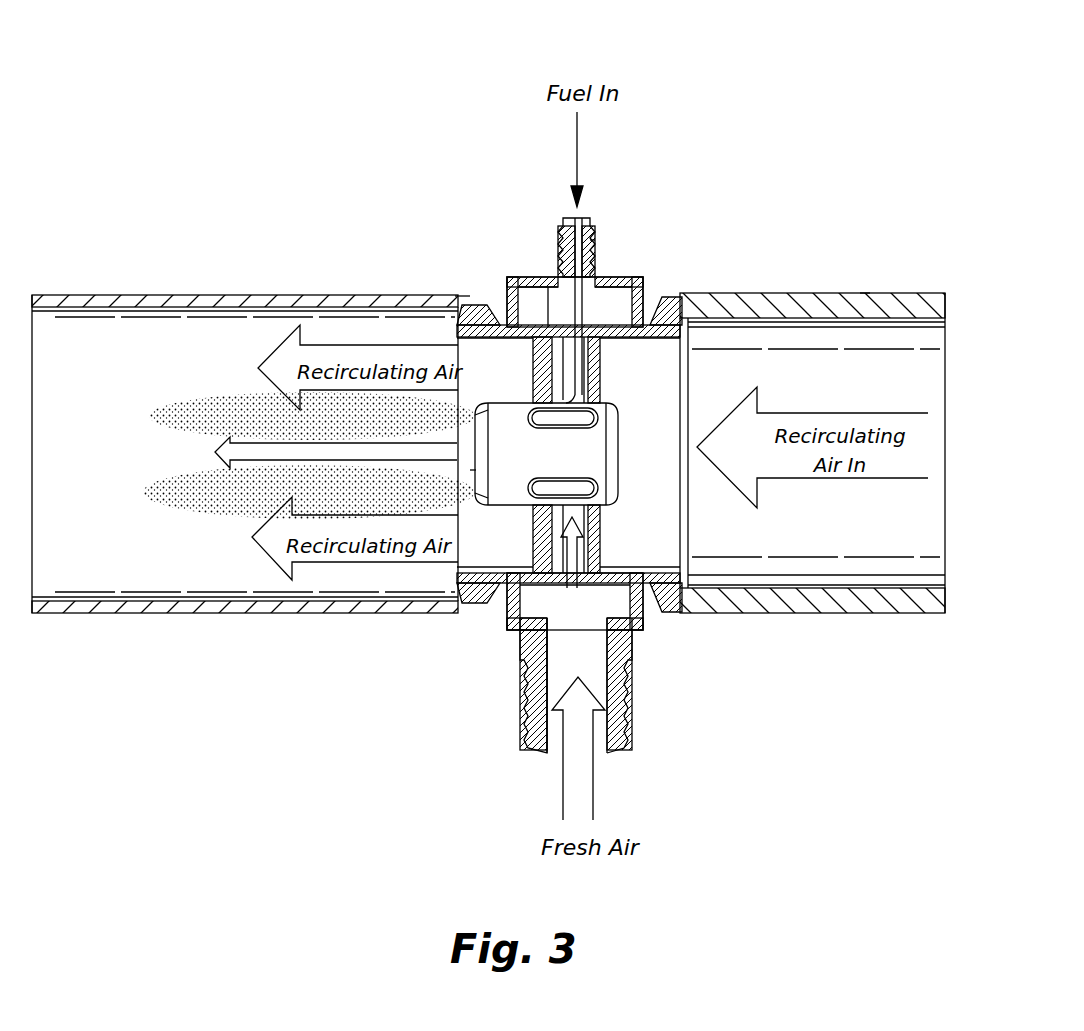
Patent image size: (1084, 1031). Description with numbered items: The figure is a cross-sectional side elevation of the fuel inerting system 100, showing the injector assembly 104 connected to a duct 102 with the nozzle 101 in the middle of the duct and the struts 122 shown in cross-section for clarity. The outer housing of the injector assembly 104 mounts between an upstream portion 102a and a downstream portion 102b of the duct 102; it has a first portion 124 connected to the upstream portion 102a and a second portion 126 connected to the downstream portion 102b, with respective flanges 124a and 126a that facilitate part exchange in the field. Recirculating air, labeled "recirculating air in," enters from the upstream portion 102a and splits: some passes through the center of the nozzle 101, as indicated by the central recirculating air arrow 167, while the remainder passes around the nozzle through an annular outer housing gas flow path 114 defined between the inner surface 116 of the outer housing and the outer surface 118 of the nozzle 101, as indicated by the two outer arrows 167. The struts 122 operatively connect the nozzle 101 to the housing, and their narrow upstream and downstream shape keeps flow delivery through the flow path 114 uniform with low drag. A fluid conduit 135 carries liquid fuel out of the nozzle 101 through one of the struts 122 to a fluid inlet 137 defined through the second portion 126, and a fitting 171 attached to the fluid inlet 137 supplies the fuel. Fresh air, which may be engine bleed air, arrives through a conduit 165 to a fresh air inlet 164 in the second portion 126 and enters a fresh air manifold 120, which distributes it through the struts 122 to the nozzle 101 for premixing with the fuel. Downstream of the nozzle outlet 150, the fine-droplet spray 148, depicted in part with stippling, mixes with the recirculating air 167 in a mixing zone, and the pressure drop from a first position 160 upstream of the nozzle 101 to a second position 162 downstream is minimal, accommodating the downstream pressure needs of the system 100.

The system 100 is at (167, 140).
The nozzle 101 is at (625, 433).
The duct 102 is at (811, 285).
The upstream portion of the duct 102a is at (864, 294).
The downstream portion of the duct 102b is at (183, 295).
The injector assembly 104 is at (658, 250).
The annular outer housing gas flow path 114 is at (488, 320).
The inner surface of the outer housing 116 is at (643, 563).
The outer surface of the nozzle 118 is at (527, 460).
The fresh air manifold 120 is at (607, 598).
The struts 122 is at (600, 345).
The first portion of the outer housing 124 is at (667, 300).
The flange 124a is at (686, 615).
The second portion of the outer housing 126 is at (517, 280).
The flange 126a is at (462, 295).
The fluid conduit 135 is at (577, 312).
The fluid inlet 137 is at (602, 273).
The spray 148 is at (395, 413).
The outlet of the nozzle 150 is at (475, 470).
The first position 160 is at (637, 464).
The second position 162 is at (347, 500).
The fresh air inlet 164 is at (530, 630).
The conduit 165 is at (632, 672).
The recirculating air arrows 167 is at (350, 345).
The fitting 171 is at (568, 227).